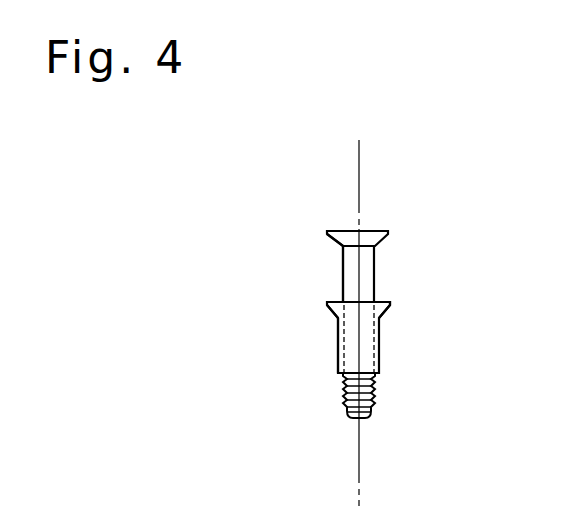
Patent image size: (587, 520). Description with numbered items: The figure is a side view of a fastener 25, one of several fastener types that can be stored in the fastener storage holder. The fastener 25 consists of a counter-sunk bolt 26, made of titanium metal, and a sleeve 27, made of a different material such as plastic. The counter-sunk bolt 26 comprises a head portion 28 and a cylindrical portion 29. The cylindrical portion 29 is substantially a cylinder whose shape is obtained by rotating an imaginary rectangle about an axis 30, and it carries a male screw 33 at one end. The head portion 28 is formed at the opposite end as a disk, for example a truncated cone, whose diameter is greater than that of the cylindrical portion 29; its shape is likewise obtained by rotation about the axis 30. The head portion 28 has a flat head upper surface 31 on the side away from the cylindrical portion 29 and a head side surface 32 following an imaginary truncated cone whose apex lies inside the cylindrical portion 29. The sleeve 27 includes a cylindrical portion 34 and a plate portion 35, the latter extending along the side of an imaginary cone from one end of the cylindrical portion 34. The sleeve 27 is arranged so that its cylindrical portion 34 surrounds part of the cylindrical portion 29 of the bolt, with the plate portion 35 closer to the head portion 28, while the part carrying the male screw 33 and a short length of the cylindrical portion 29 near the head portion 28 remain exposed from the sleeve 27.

The fastener 25 is at (458, 295).
The counter-sunk bolt 26 is at (374, 267).
The sleeve 27 is at (379, 352).
The head portion 28 is at (382, 232).
The cylindrical portion 29 is at (343, 267).
The axis 30 is at (359, 170).
The head upper surface 31 is at (343, 230).
The head side surface 32 is at (334, 244).
The male screw 33 is at (343, 391).
The cylindrical portion 34 is at (338, 343).
The plate portion 35 is at (331, 318).